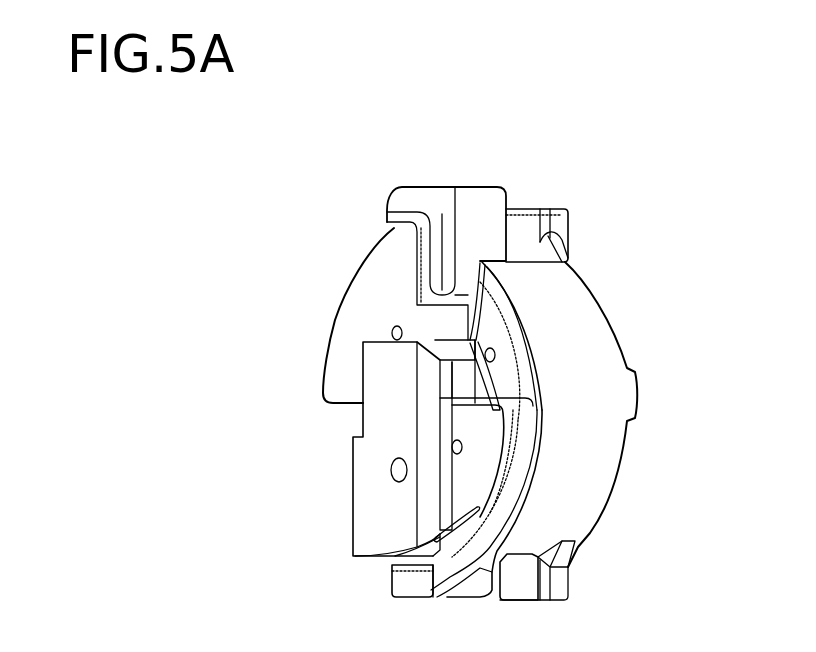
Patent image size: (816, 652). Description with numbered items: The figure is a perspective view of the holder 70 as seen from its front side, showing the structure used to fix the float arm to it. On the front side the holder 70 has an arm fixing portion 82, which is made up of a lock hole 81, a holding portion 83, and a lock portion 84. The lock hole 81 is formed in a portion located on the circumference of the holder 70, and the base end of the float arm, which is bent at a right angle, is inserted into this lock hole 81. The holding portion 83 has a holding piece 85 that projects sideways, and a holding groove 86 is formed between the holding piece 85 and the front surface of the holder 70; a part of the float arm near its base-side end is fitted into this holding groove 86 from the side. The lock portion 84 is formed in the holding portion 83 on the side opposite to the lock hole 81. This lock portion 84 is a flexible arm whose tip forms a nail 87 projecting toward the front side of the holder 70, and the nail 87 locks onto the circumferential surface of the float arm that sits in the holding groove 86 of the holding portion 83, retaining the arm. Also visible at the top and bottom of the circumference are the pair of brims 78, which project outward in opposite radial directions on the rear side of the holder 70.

The holder 70 is at (352, 187).
The brims 78 is at (565, 209).
The lock hole 81 is at (411, 225).
The arm fixing portion 82 is at (465, 430).
The holding portion 83 is at (428, 482).
The lock portion 84 is at (460, 596).
The holding piece 85 is at (368, 516).
The holding groove 86 is at (418, 553).
The nail 87 is at (388, 598).